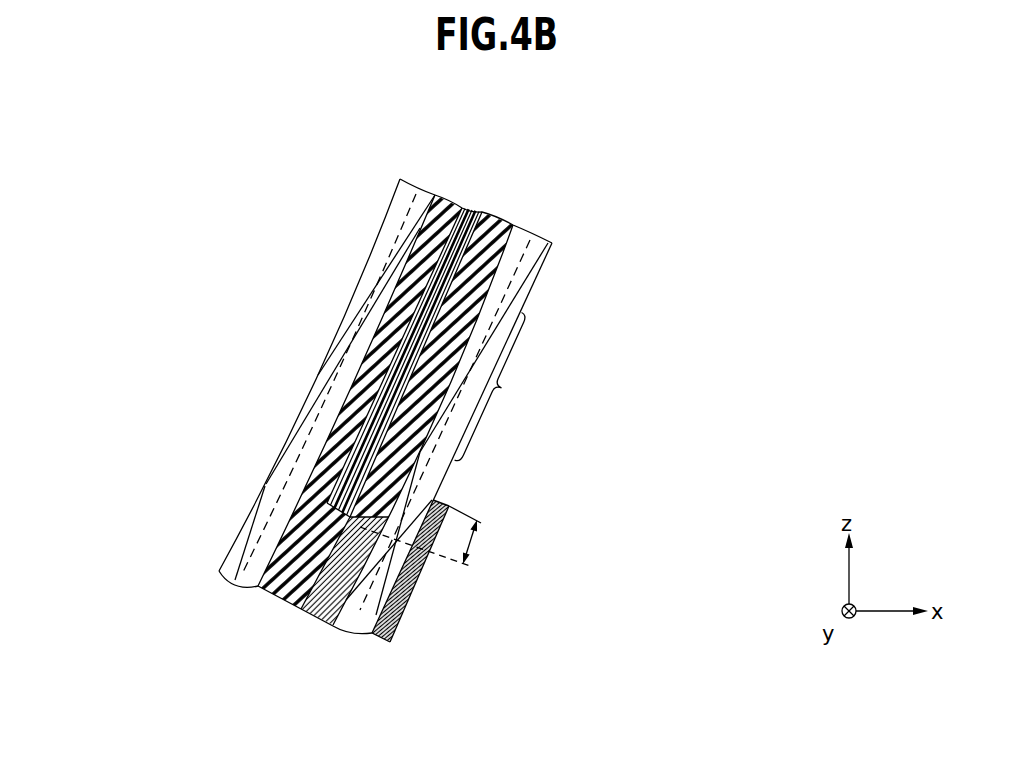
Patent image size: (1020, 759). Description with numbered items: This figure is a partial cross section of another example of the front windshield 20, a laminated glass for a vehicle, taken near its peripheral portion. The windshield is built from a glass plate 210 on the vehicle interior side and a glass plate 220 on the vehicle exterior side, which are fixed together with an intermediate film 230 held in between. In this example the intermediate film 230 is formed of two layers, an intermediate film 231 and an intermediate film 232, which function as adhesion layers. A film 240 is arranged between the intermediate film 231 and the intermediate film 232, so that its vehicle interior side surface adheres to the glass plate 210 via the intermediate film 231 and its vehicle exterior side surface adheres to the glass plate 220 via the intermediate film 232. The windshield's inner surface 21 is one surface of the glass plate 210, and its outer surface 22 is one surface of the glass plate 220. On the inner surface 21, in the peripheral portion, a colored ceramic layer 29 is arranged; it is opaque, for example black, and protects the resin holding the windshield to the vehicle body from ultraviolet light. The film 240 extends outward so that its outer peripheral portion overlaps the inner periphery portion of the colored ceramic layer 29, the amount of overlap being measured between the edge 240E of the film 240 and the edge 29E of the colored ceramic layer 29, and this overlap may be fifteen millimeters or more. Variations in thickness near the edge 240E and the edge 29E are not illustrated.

The front windshield 20 is at (90, 121).
The inner surface 21 is at (533, 285).
The glass plate 210 is at (526, 250).
The outer surface 22 is at (373, 243).
The glass plate 220 is at (405, 219).
The intermediate film 230 is at (328, 417).
The intermediate film 231 is at (318, 375).
The intermediate film 232 is at (330, 450).
The film 240 is at (386, 307).
The edge of the film 240E is at (290, 603).
The colored ceramic layer 29 is at (407, 600).
The edge of the colored ceramic layer 29E is at (437, 497).